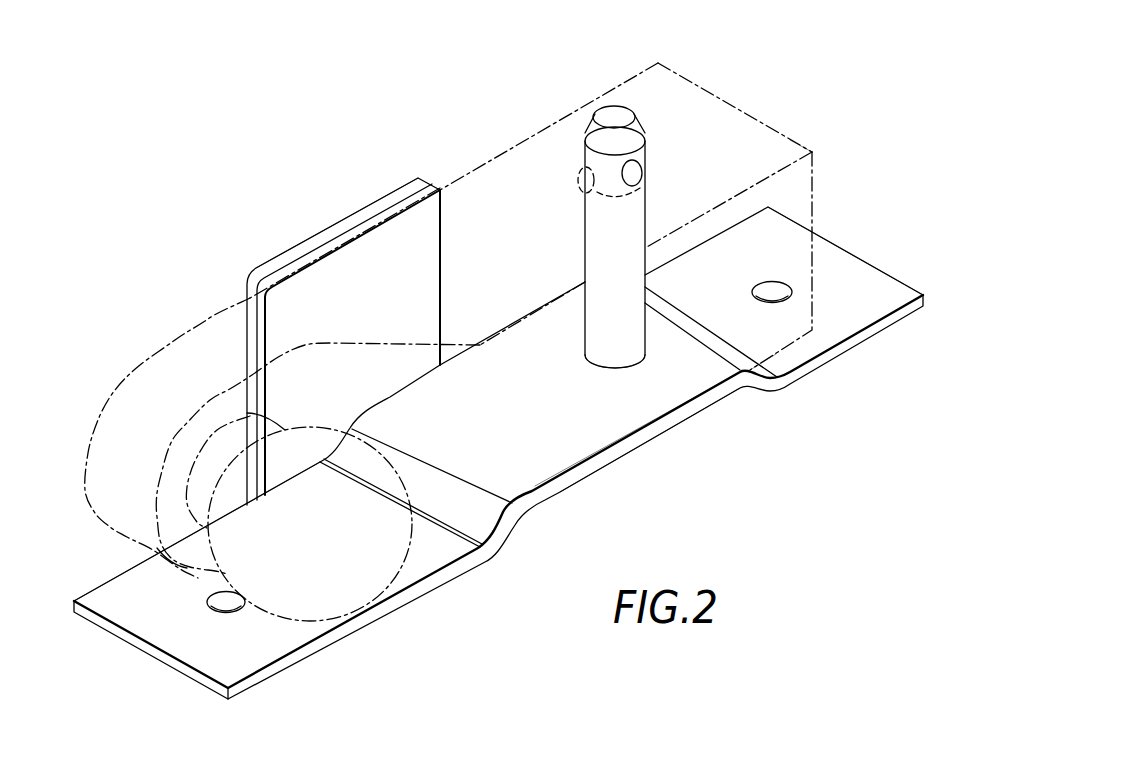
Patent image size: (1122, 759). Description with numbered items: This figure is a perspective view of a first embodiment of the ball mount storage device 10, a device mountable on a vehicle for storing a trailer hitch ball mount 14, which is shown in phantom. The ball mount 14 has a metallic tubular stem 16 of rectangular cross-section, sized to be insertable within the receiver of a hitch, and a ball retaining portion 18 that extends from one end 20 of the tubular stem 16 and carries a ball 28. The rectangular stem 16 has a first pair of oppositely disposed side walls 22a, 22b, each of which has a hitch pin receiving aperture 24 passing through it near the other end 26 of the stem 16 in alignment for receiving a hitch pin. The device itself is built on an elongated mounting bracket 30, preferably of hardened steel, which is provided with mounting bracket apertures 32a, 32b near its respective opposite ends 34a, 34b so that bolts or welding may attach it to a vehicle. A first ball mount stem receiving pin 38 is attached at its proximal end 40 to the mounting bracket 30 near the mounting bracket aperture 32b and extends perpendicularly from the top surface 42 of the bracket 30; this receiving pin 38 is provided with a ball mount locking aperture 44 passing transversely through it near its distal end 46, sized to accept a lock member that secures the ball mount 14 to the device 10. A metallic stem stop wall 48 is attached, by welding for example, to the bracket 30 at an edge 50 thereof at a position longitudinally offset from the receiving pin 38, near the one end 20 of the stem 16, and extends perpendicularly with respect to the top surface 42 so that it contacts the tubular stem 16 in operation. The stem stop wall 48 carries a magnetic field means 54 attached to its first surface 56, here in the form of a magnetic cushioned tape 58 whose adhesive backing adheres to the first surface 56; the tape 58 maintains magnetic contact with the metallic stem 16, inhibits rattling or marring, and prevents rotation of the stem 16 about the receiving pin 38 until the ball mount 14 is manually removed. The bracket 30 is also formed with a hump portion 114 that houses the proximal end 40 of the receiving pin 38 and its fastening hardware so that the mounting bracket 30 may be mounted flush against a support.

The ball mount storage device 10 is at (846, 213).
The ball mount 14 is at (764, 118).
The tubular stem 16 is at (480, 171).
The ball retaining portion 18 is at (180, 347).
The one end of the tubular stem 20 is at (483, 342).
The stem side wall 22a is at (713, 98).
The stem side wall 22b is at (676, 348).
The hitch pin receiving aperture 24 is at (584, 156).
The other end of the stem 26 is at (642, 80).
The ball 28 is at (432, 583).
The mounting bracket 30 is at (829, 352).
The mounting bracket aperture 32a is at (211, 600).
The mounting bracket aperture 32b is at (772, 282).
The end of the mounting bracket 34a is at (200, 665).
The end of the mounting bracket 34b is at (848, 270).
The ball mount stem receiving pin 38 is at (600, 112).
The proximal end of the stem receiving pin 40 is at (603, 366).
The top surface of the mounting bracket 42 is at (661, 405).
The ball mount locking aperture 44 is at (647, 172).
The distal end of the stem receiving pin 46 is at (591, 187).
The stem stop wall 48 is at (360, 214).
The edge of the mounting bracket 50 is at (127, 573).
The magnetic field means 54 is at (288, 266).
The first surface of the stem stop wall 56 is at (407, 190).
The magnetic cushioned tape 58 is at (327, 244).
The hump portion 114 is at (590, 470).